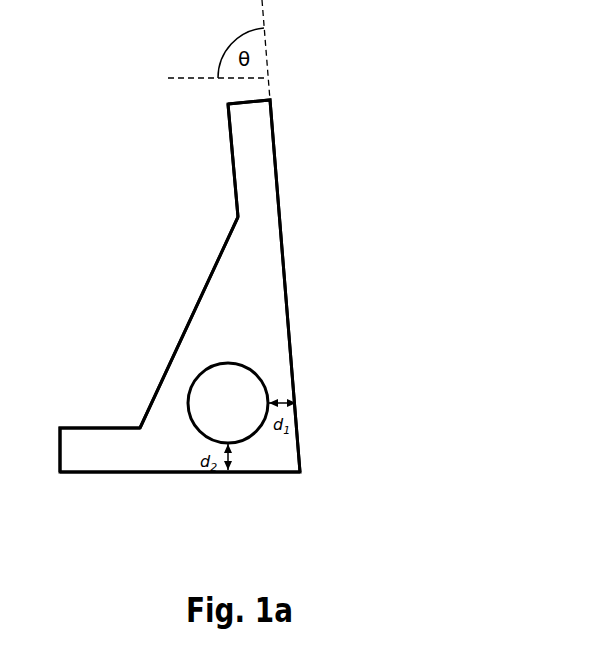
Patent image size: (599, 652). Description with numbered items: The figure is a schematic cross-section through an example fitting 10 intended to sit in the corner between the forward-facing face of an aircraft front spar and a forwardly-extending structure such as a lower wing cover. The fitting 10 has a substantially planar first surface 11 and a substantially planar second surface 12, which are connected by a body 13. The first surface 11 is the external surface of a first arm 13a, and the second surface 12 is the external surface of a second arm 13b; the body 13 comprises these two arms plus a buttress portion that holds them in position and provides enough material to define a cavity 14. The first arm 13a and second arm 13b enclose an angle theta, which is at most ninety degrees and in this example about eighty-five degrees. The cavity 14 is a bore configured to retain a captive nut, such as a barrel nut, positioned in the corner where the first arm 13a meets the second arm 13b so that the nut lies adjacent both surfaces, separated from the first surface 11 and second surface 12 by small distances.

The fitting 10 is at (393, 242).
The first surface 11 is at (279, 178).
The second surface 12 is at (155, 472).
The body 13 is at (190, 330).
The first arm 13a is at (245, 163).
The second arm 13b is at (100, 455).
The cavity 14 is at (262, 382).